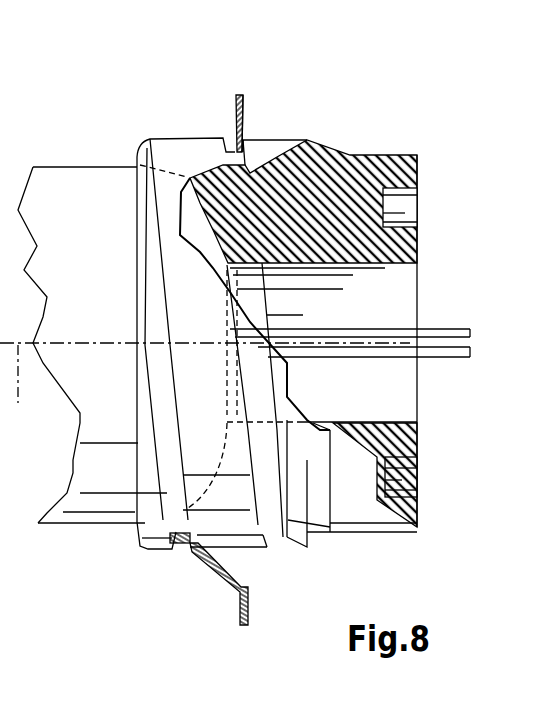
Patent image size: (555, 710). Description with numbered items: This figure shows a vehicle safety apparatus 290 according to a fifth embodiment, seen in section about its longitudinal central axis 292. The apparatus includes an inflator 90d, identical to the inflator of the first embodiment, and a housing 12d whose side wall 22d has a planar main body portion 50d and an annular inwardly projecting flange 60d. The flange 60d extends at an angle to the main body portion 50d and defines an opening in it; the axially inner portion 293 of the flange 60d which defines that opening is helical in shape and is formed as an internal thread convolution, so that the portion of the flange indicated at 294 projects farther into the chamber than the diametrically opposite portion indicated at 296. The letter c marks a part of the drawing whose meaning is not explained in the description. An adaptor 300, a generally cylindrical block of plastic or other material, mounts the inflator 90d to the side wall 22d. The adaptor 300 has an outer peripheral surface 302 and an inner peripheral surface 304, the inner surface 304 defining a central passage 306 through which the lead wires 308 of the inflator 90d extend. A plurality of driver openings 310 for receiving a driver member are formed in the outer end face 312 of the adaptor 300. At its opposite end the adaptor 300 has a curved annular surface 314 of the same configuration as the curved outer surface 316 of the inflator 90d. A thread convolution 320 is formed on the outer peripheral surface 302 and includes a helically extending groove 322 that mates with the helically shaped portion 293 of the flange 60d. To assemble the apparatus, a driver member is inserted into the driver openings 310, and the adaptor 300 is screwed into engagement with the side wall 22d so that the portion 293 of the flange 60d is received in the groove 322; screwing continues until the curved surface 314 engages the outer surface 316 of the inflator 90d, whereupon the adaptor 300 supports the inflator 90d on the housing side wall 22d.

The housing 12d is at (226, 93).
The side wall 22d is at (243, 128).
The vehicle safety apparatus 290 is at (316, 60).
The longitudinal central axis 292 is at (19, 388).
The axially inner portion of the flange 293 is at (228, 148).
The portion of the flange 294 is at (218, 578).
The portion of the flange 296 is at (233, 150).
The adaptor 300 is at (351, 145).
The outer peripheral surface 302 is at (392, 153).
The inner peripheral surface 304 is at (363, 423).
The central passage 306 is at (395, 287).
The lead wires 308 is at (448, 352).
The driver openings 310 is at (417, 208).
The outer end face 312 is at (420, 510).
The curved annular surface 314 is at (210, 195).
The curved outer surface 316 is at (205, 262).
The thread convolution 320 is at (152, 134).
The helically extending groove 322 is at (253, 147).
The inflator 90d is at (31, 163).
The housing part c is at (5, 133).
The planar main body portion 50d is at (252, 606).
The annular inwardly projecting flange 60d is at (252, 573).